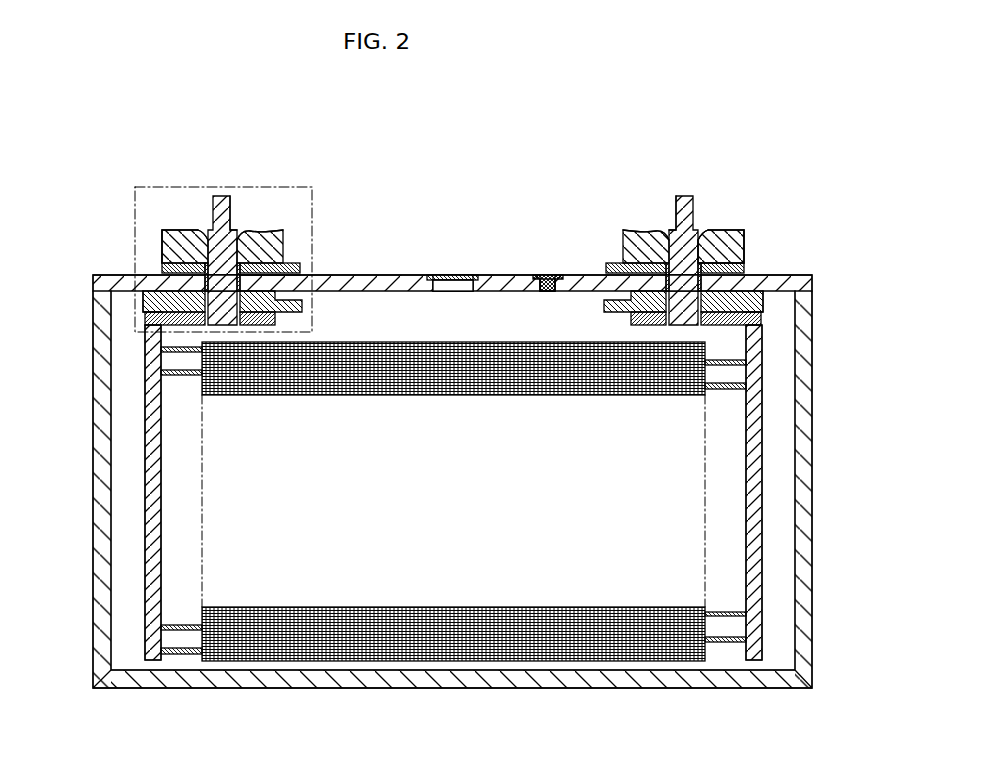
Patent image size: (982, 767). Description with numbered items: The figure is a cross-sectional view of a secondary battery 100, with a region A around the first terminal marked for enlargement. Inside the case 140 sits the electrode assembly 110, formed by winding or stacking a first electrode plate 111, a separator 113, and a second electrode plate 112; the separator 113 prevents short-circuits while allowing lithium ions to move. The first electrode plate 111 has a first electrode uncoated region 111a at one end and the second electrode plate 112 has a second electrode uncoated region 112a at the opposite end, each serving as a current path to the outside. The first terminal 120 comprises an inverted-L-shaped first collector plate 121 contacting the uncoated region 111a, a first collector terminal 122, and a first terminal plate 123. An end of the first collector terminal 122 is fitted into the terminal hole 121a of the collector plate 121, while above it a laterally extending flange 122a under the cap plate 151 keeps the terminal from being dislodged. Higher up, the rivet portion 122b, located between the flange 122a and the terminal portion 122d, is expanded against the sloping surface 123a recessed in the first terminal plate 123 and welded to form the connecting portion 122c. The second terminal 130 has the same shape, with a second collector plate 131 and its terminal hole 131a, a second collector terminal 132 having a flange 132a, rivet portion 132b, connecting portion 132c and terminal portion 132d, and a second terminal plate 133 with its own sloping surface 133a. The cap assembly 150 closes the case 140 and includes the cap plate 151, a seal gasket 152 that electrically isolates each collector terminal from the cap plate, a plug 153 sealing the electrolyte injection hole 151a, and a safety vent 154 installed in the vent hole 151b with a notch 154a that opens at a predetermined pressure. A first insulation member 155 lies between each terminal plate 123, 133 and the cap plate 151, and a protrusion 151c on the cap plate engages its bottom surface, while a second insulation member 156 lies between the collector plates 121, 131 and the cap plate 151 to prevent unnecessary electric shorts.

The secondary battery 100 is at (842, 115).
The electrode assembly 110 is at (547, 672).
The first electrode plate 111 is at (322, 662).
The first electrode uncoated region 111a is at (180, 656).
The second electrode plate 112 is at (627, 661).
The second electrode uncoated region 112a is at (728, 643).
The separator 113 is at (472, 659).
The first terminal 120 is at (221, 193).
The first collector plate 121 is at (141, 458).
The terminal hole 121a is at (202, 314).
The first collector terminal 122 is at (191, 222).
The flange 122a is at (138, 300).
The rivet portion 122b is at (160, 235).
The connecting portion 122c is at (206, 209).
The terminal portion 122d is at (234, 207).
The first terminal plate 123 is at (160, 247).
The sloping surface 123a is at (277, 232).
The second terminal 130 is at (684, 193).
The second collector plate 131 is at (768, 460).
The terminal hole 131a is at (760, 318).
The second collector terminal 132 is at (710, 282).
The flange 132a is at (766, 306).
The rivet portion 132b is at (699, 224).
The connecting portion 132c is at (655, 224).
The terminal portion 132d is at (692, 203).
The second terminal plate 133 is at (750, 245).
The sloping surface 133a is at (712, 235).
The case 140 is at (800, 386).
The cap assembly 150 is at (551, 184).
The cap plate 151 is at (382, 274).
The electrolyte injection hole 151a is at (546, 292).
The vent hole 151b is at (453, 292).
The protrusion 151c is at (288, 275).
The seal gasket 152 is at (284, 280).
The plug 153 is at (545, 275).
The safety vent 154 is at (472, 275).
The notch 154a is at (450, 275).
The first insulation member 155 is at (298, 267).
The second insulation member 156 is at (301, 304).
The enlarged region A is at (259, 186).